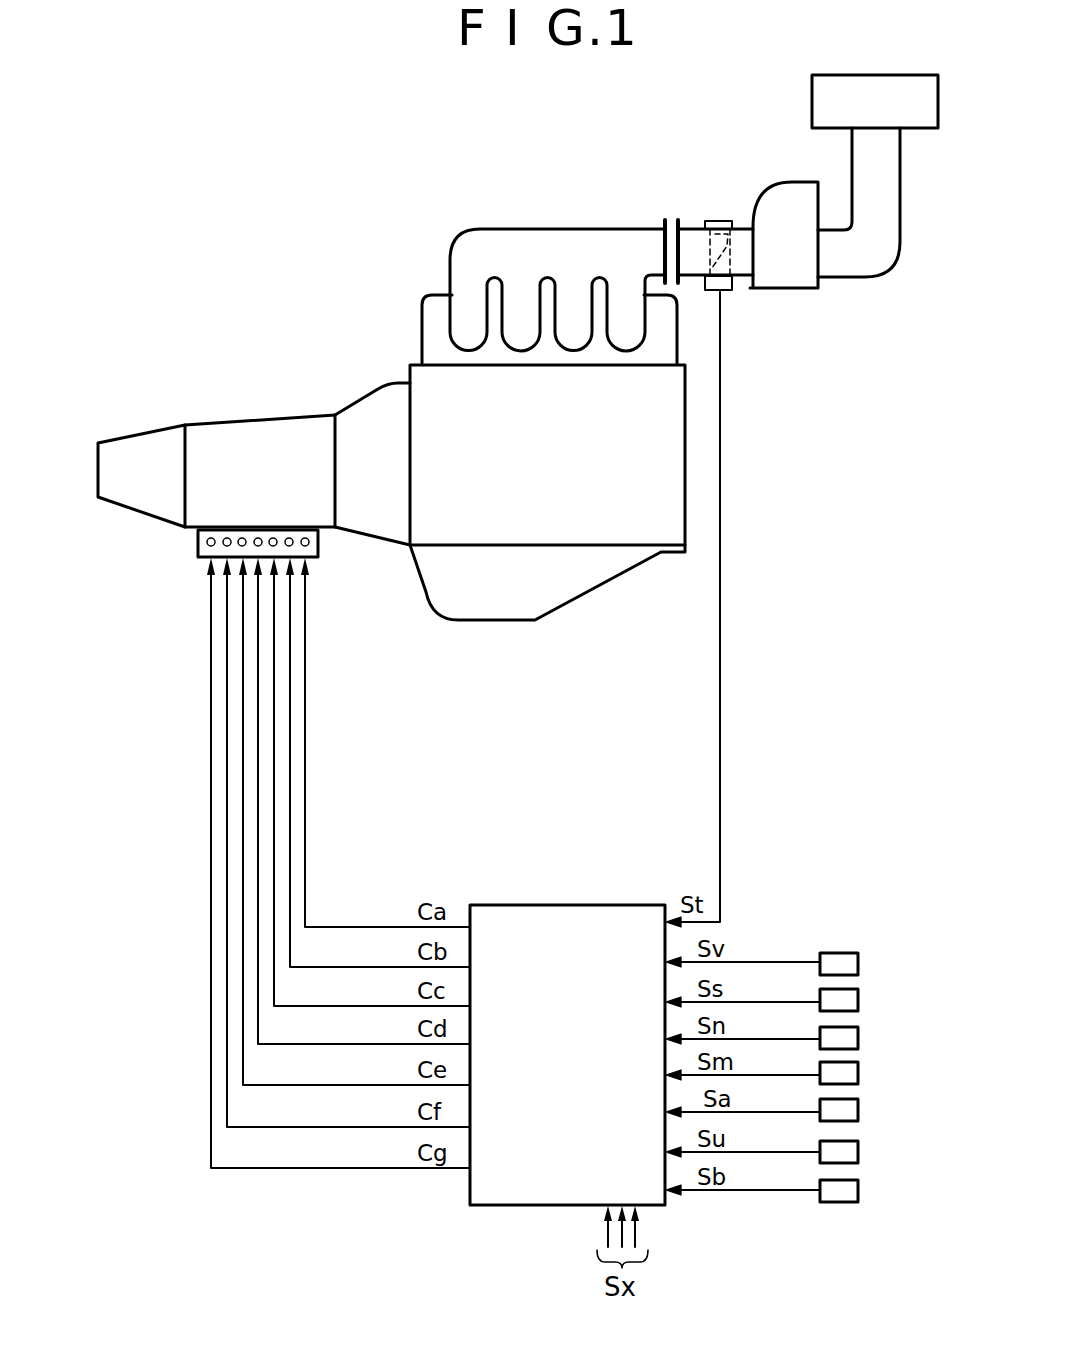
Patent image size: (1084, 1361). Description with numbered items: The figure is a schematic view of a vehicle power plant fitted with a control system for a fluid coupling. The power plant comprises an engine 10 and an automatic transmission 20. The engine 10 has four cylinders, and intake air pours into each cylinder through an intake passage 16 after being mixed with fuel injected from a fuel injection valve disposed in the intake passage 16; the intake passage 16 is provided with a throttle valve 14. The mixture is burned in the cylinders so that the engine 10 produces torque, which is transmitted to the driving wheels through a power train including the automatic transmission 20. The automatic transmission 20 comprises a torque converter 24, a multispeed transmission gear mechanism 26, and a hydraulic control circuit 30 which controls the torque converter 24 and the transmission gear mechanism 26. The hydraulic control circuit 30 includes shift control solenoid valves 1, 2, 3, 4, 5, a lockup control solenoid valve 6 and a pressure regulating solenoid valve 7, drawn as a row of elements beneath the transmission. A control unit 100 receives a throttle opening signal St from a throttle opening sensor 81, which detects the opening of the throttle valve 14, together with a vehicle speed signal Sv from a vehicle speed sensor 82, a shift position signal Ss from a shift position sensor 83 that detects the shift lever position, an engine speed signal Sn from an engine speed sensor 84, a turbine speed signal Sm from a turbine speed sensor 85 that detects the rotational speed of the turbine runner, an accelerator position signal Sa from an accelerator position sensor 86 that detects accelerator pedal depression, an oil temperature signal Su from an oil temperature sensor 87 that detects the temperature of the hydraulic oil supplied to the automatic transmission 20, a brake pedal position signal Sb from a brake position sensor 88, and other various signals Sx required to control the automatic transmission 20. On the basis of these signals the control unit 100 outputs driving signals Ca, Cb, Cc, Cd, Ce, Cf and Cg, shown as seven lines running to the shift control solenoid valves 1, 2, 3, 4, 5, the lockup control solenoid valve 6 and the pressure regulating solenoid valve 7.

The shift control solenoid valve 1 is at (325, 543).
The shift control solenoid valve 2 is at (290, 537).
The shift control solenoid valve 3 is at (274, 537).
The shift control solenoid valve 4 is at (257, 537).
The shift control solenoid valve 5 is at (240, 537).
The lockup control solenoid valve 6 is at (225, 537).
The pressure regulating solenoid valve 7 is at (190, 545).
The engine 10 is at (658, 532).
The throttle valve 14 is at (696, 250).
The intake passage 16 is at (590, 242).
The automatic transmission 20 is at (216, 403).
The torque converter 24 is at (382, 403).
The multispeed transmission gear mechanism 26 is at (280, 377).
The hydraulic control circuit 30 is at (254, 534).
The throttle opening sensor 81 is at (733, 292).
The vehicle speed sensor 82 is at (858, 958).
The shift position sensor 83 is at (858, 1000).
The engine speed sensor 84 is at (852, 1043).
The turbine speed sensor 85 is at (858, 1081).
The accelerator position sensor 86 is at (858, 1112).
The oil temperature sensor 87 is at (858, 1155).
The brake position sensor 88 is at (858, 1203).
The control unit 100 is at (595, 905).